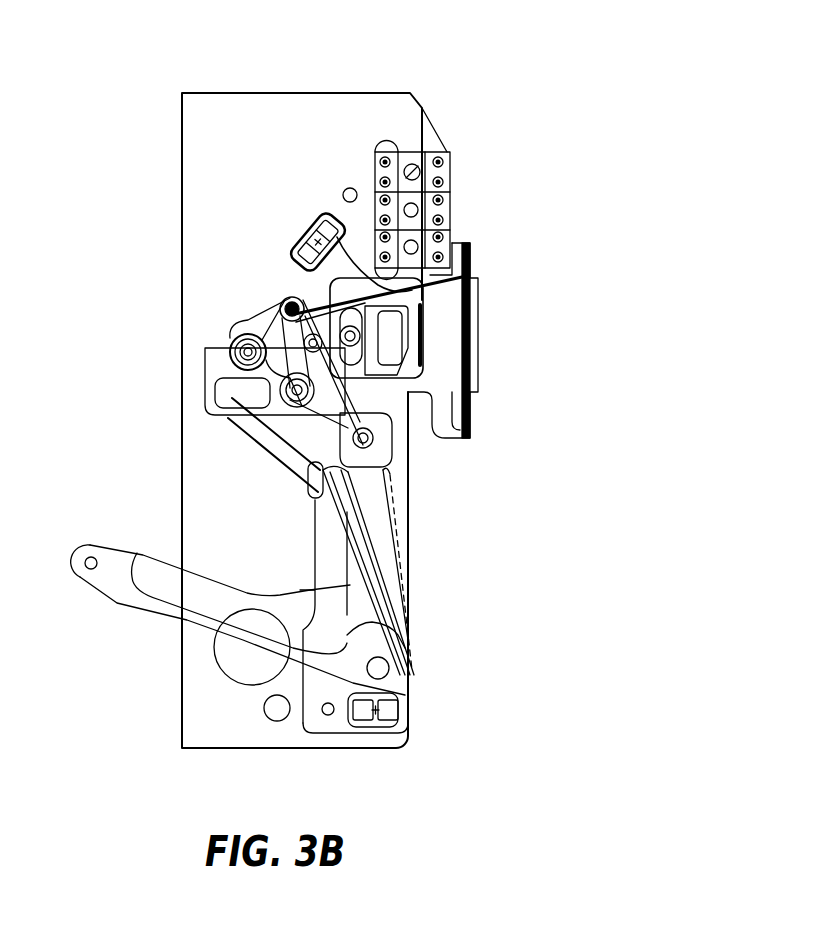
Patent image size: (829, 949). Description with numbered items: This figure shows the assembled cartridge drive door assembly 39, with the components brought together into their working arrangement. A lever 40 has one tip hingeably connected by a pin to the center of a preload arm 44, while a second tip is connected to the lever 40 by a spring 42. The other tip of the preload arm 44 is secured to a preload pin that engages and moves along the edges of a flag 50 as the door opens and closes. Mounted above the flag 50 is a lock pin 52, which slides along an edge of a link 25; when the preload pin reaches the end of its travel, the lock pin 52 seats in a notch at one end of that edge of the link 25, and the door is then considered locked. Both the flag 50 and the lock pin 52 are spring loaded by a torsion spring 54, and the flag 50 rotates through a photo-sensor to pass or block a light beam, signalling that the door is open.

The cartridge drive door assembly 39 is at (563, 108).
The flag 50 is at (350, 243).
The lock pin 52 is at (288, 302).
The torsion spring 54 is at (228, 368).
The link 25 is at (461, 443).
The preload arm 44 is at (369, 478).
The lever 40 is at (118, 601).
The spring 42 is at (406, 679).